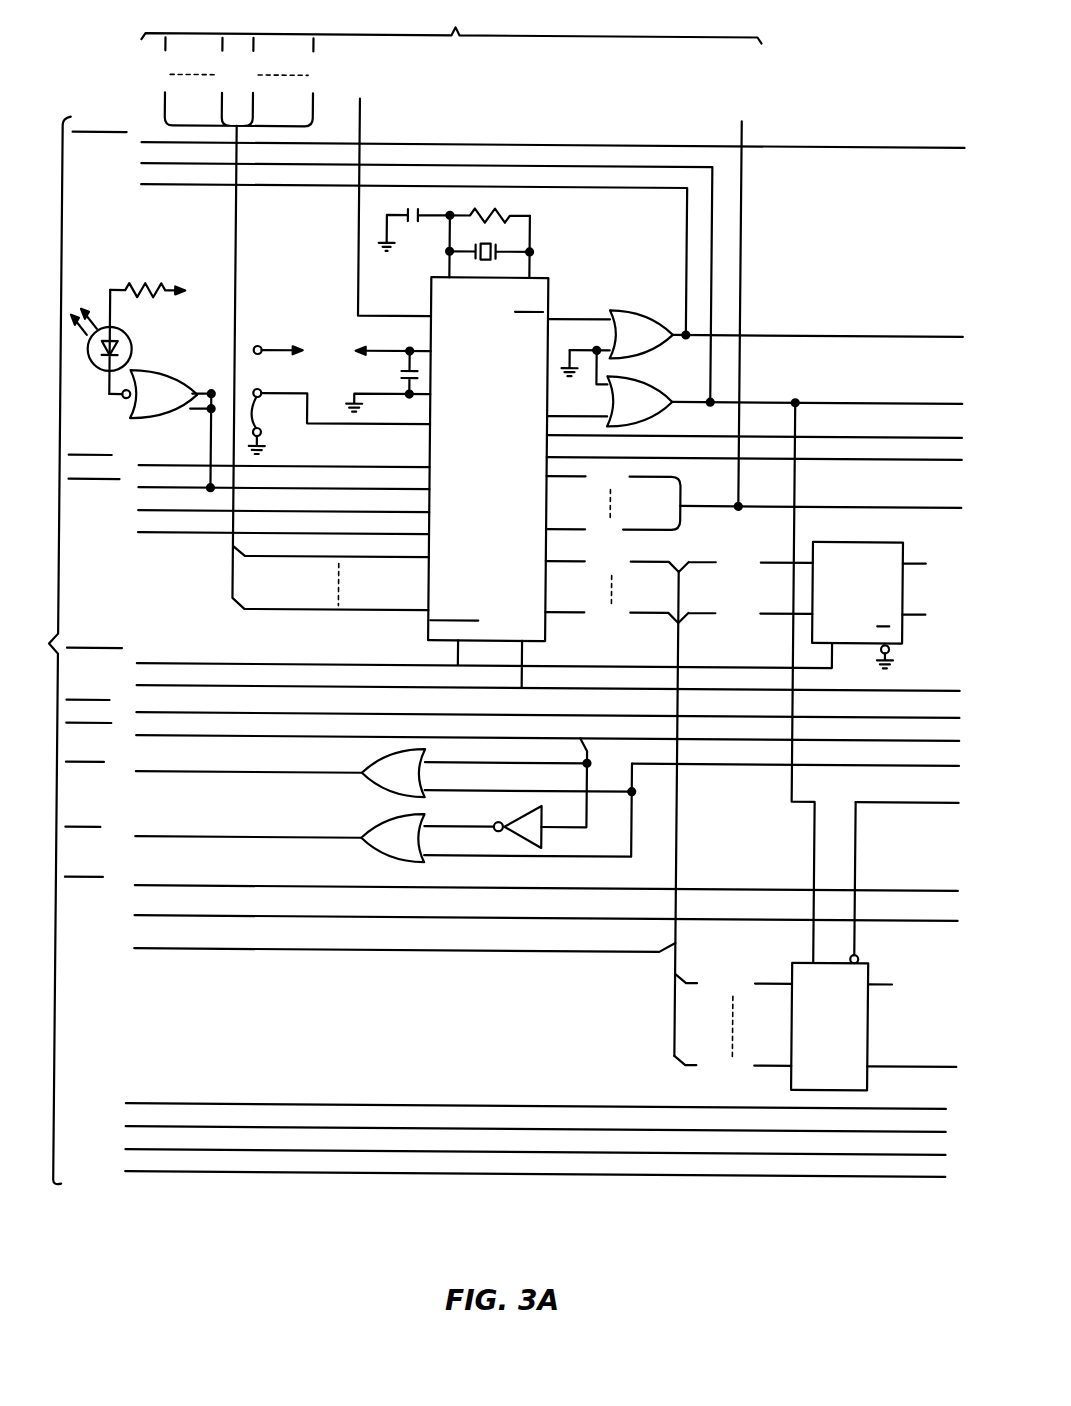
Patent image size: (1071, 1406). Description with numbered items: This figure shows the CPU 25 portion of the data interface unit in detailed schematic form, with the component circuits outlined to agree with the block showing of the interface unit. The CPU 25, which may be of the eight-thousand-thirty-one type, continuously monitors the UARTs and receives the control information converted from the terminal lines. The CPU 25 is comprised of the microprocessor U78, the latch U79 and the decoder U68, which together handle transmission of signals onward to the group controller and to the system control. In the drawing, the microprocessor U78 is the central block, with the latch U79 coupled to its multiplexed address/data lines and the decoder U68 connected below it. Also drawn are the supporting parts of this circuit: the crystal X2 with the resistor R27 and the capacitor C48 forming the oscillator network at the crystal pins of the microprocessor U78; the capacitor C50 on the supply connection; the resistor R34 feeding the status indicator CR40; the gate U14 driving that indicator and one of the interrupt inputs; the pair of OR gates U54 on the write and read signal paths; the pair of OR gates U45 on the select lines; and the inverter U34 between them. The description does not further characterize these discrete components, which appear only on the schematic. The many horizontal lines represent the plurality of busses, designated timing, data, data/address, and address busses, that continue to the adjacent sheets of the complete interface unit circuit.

The interface unit CPU 25 is at (493, 618).
The element U78 is at (488, 459).
The OR gates U54 is at (610, 368).
The resistor R27 is at (514, 204).
The crystal X2 is at (502, 233).
The capacitor C48 is at (414, 230).
The resistor R34 is at (168, 281).
The status LED CR40 is at (133, 342).
The gate U14 is at (161, 429).
The capacitor C50 is at (387, 372).
The latch U79 is at (869, 605).
The OR gates U45 is at (498, 806).
The inverter U34 is at (537, 793).
The decoder U68 is at (875, 747).